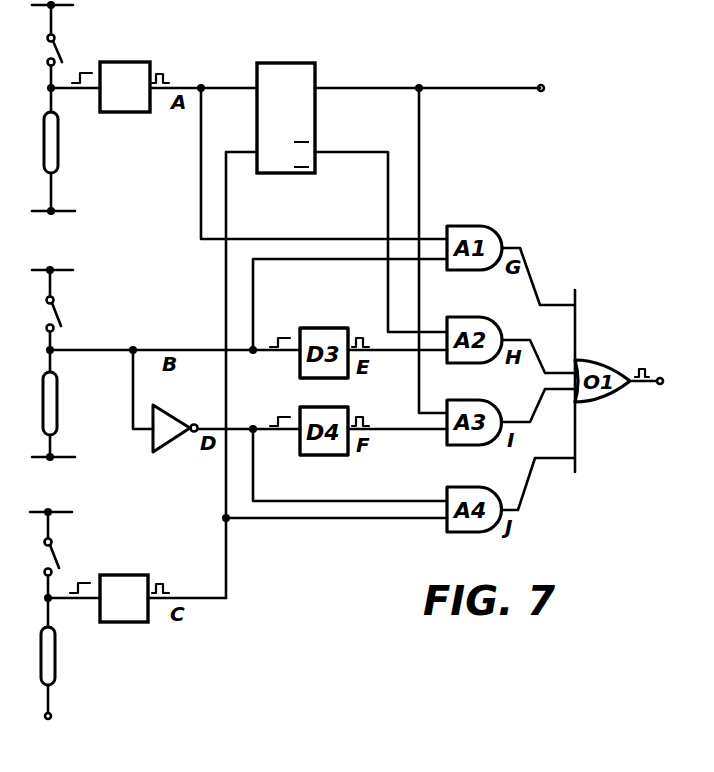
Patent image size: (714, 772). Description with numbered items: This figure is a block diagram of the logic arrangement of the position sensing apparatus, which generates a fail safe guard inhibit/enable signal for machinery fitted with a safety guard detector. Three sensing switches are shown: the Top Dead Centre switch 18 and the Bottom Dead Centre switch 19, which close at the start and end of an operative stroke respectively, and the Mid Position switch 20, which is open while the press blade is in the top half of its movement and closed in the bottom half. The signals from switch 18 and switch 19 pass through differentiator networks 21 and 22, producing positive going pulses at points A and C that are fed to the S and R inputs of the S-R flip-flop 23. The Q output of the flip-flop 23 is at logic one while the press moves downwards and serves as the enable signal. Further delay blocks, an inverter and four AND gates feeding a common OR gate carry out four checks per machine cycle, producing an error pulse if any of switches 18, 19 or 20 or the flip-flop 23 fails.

The Top Dead Centre switch 18 is at (57, 48).
The Bottom Dead Centre switch 19 is at (58, 560).
The Mid Position switch 20 is at (67, 298).
The differentiator network 21 is at (130, 62).
The differentiator network 22 is at (131, 551).
The S-R flip-flop 23 is at (303, 112).